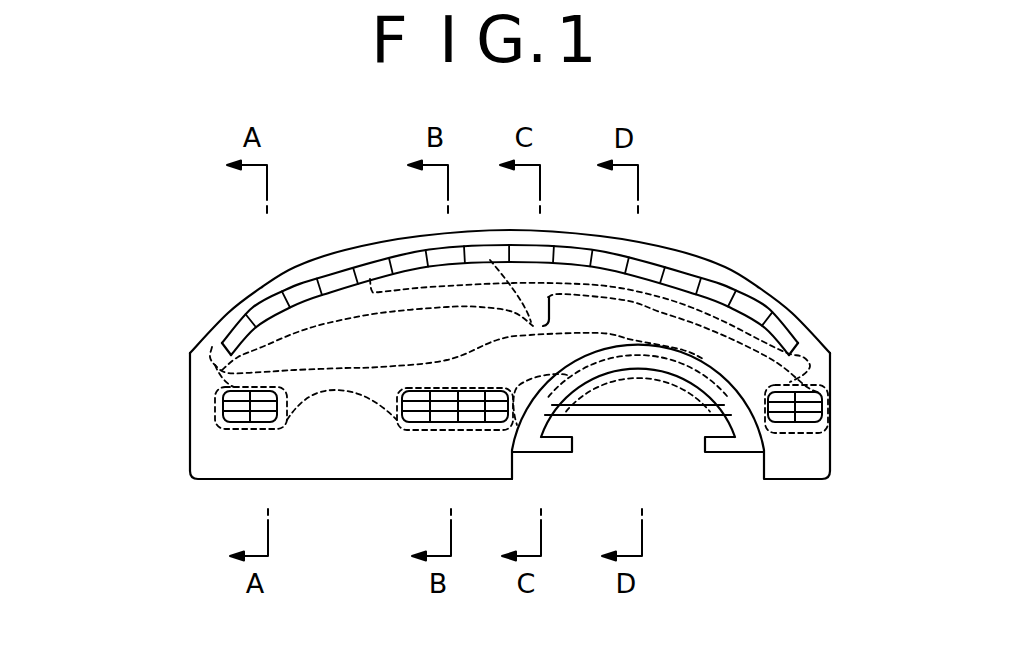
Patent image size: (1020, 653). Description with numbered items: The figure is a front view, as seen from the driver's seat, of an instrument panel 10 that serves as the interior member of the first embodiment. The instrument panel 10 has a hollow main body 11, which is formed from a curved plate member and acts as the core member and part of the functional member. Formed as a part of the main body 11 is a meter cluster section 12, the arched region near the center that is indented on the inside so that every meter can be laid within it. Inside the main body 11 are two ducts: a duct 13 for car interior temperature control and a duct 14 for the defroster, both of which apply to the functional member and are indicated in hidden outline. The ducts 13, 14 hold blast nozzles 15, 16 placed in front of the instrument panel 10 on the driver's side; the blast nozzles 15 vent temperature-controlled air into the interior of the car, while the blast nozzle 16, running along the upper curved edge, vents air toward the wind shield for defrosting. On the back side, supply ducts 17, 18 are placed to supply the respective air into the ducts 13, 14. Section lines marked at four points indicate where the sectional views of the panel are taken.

The instrument panel 10 is at (169, 294).
The hollow main body 11 is at (202, 378).
The meter cluster section 12 is at (645, 353).
The duct for car interior temperature control 13 is at (337, 383).
The duct for defroster 14 is at (628, 292).
The blast nozzle 15 is at (233, 406).
The blast nozzle 16 is at (681, 277).
The supply duct 17 is at (577, 387).
The supply duct 18 is at (538, 325).